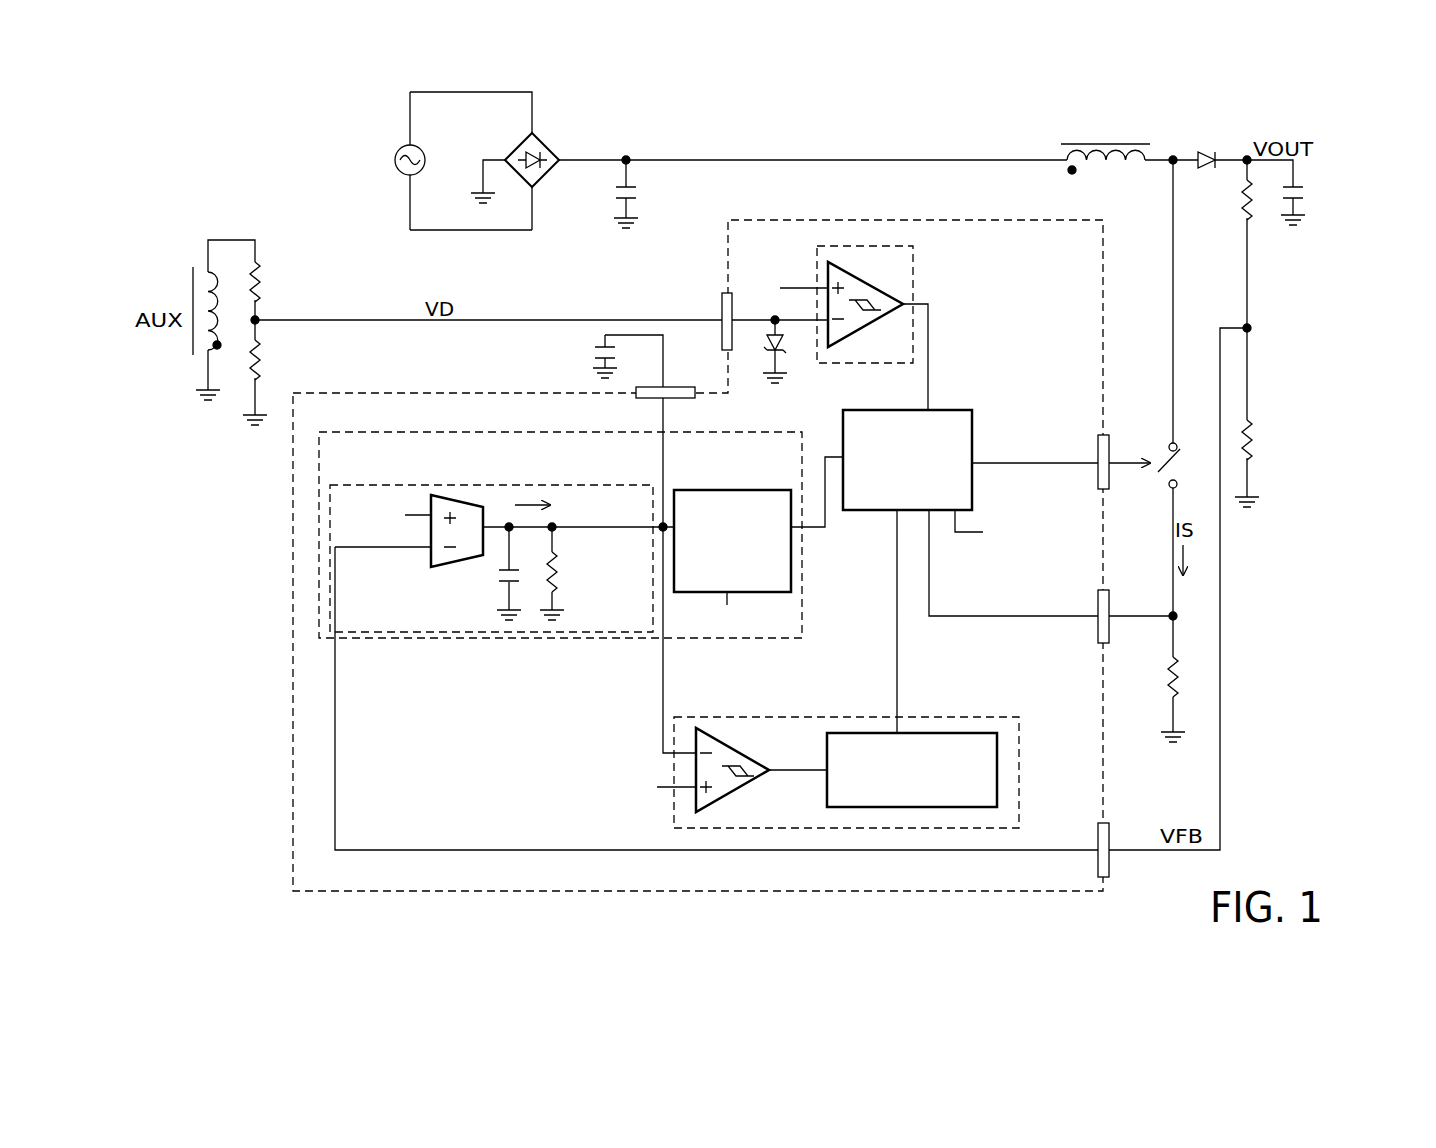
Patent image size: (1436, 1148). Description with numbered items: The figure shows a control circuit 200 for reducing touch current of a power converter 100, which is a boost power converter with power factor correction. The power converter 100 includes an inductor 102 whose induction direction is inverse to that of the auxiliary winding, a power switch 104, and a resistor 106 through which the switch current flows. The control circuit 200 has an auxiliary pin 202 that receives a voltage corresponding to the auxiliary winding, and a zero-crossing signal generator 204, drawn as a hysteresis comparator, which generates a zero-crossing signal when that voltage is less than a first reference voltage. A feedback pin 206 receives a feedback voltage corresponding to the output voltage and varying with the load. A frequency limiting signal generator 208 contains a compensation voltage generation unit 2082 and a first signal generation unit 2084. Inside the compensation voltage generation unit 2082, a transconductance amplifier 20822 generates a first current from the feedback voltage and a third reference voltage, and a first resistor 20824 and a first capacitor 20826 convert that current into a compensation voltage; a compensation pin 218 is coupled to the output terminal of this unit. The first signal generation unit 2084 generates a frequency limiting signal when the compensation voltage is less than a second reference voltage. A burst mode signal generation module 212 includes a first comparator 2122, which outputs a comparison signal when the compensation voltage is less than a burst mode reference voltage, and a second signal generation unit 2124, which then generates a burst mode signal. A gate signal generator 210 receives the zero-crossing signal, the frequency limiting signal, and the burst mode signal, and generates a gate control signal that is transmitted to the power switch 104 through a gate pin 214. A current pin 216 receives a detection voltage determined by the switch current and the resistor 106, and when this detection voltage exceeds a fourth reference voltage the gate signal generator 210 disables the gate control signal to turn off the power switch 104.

The power converter 100 is at (1350, 255).
The inductor 102 is at (1106, 172).
The power switch 104 is at (1180, 456).
The resistor 106 is at (1168, 680).
The control circuit 200 is at (293, 748).
The auxiliary pin 202 is at (723, 300).
The zero-crossing signal generator 204 is at (913, 262).
The feedback pin 206 is at (1128, 816).
The frequency limiting signal generator 208 is at (450, 638).
The gate signal generator 210 is at (843, 420).
The burst mode signal generation module 212 is at (836, 828).
The gate pin 214 is at (1109, 440).
The current pin 216 is at (1098, 630).
The compensation pin 218 is at (678, 387).
The compensation voltage generation unit 2082 is at (395, 484).
The first signal generation unit 2084 is at (745, 475).
The first comparator 2122 is at (725, 745).
The second signal generation unit 2124 is at (997, 731).
The transconductance amplifier 20822 is at (463, 497).
The first resistor 20824 is at (500, 576).
The first capacitor 20826 is at (560, 578).